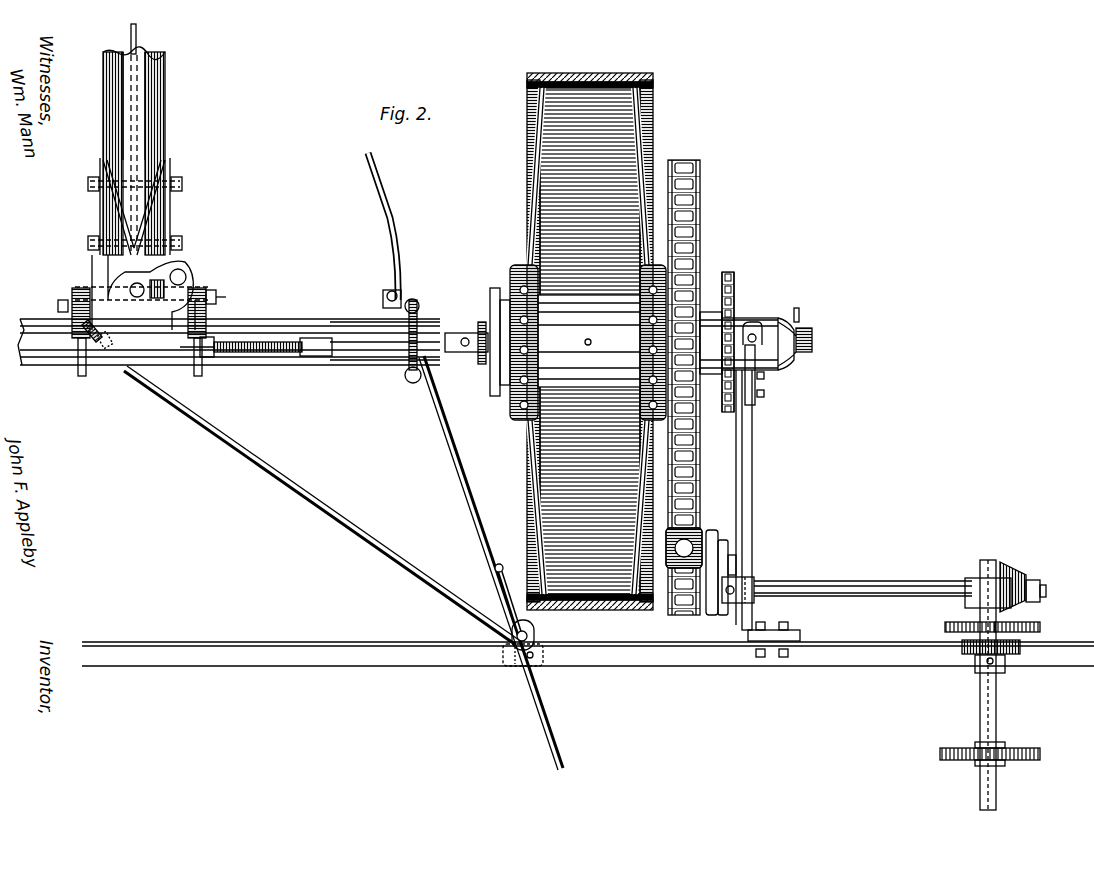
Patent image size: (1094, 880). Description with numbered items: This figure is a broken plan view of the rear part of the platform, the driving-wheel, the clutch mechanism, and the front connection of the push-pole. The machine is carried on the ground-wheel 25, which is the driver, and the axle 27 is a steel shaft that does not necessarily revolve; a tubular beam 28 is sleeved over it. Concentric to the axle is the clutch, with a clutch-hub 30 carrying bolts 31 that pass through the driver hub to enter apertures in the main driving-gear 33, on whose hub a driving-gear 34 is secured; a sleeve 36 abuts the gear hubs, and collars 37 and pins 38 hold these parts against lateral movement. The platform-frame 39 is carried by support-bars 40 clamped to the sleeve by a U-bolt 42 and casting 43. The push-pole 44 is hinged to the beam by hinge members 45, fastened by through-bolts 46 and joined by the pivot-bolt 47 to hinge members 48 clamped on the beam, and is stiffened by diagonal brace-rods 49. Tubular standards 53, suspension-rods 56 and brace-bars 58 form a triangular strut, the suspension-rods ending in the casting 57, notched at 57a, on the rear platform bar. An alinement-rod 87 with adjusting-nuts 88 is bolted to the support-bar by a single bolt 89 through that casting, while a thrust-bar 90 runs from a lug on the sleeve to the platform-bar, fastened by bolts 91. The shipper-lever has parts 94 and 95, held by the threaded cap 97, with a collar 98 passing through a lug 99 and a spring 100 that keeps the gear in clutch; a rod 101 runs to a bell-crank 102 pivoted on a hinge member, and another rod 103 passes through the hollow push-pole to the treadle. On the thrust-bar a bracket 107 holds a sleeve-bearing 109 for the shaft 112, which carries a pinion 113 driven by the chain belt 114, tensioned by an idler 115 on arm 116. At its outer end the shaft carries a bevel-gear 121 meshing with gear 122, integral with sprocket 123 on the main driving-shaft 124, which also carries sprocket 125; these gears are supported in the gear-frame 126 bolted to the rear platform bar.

The ground-wheel 25 is at (530, 80).
The axle 27 is at (812, 340).
The tubular beam 28 is at (58, 353).
The clutch-hub 30 is at (492, 373).
The bolts 31 is at (582, 400).
The main driving-gear 33 is at (687, 160).
The driving-gear 34 is at (735, 285).
The sleeve 36 is at (768, 318).
The collars or washers 37 is at (786, 368).
The pins 38 is at (803, 314).
The platform-frame 39 is at (752, 649).
The support-bars or line-levers 40 is at (445, 455).
The U-bolt 42 is at (422, 320).
The casting 43 is at (410, 383).
The push-pole 44 is at (150, 115).
The hinge members 45 is at (172, 205).
The through-bolts 46 is at (182, 241).
The pivot-bolt 47 is at (226, 297).
The hinge members 48 is at (198, 290).
The diagonal brace-rods 49 is at (388, 195).
The tubular standards 53 is at (386, 292).
The suspension-rods 56 is at (500, 564).
The casting 57 is at (536, 658).
The notch 57a is at (510, 640).
The brace-bars 58 is at (214, 292).
The rod 87 is at (300, 492).
The adjusting-nuts 88 is at (110, 340).
The bolt 89 is at (512, 666).
The thrust-bar 90 is at (752, 458).
The bolts 91 is at (770, 628).
The shipper-lever part 94 is at (469, 342).
The shipper-lever part 95 is at (380, 355).
The threaded cap 97 is at (480, 325).
The collar 98 is at (314, 352).
The lug 99 is at (214, 358).
The spring 100 is at (258, 355).
The rod 101 is at (312, 336).
The bell-crank 102 is at (130, 290).
The rod 103 is at (138, 45).
The bracket 107 is at (716, 610).
The sleeve-bearing 109 is at (752, 580).
The shaft 112 is at (835, 582).
The pinion 113 is at (677, 608).
The chain belt 114 is at (700, 496).
The idler 115 is at (690, 542).
The arm 116 is at (730, 540).
The bevel-gear 121 is at (1015, 565).
The gear 122 is at (960, 625).
The sprocket 123 is at (1030, 628).
The shaft 124 is at (997, 690).
The sprocket 125 is at (1020, 746).
The gear-frame 126 is at (960, 645).